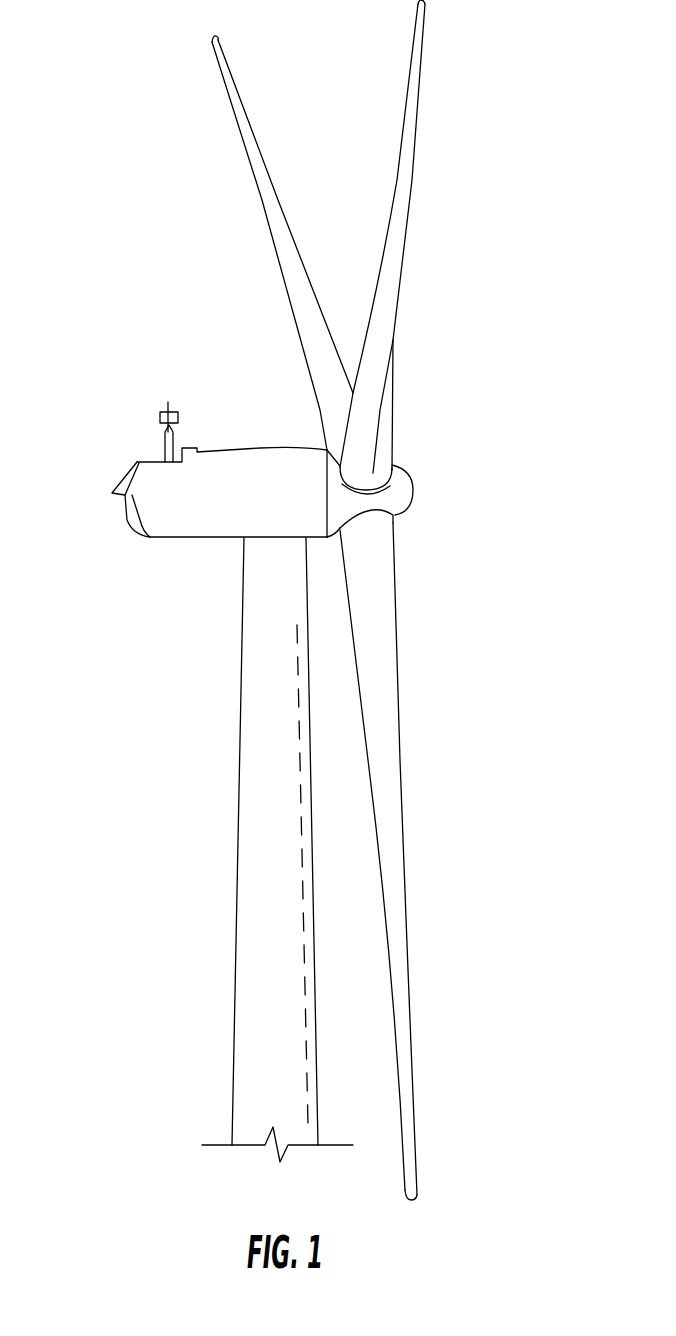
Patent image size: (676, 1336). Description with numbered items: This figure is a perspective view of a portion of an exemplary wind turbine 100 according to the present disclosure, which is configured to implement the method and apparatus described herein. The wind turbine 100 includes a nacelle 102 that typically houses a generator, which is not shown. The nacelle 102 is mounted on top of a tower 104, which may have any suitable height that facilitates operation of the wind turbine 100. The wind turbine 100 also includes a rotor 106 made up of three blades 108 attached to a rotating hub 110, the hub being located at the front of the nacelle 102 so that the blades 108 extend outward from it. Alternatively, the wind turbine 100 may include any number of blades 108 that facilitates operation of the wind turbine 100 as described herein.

The wind turbine 100 is at (125, 124).
The nacelle 102 is at (176, 544).
The tower 104 is at (235, 933).
The rotor 106 is at (495, 332).
The blades 108 is at (393, 173).
The rotating hub 110 is at (413, 490).